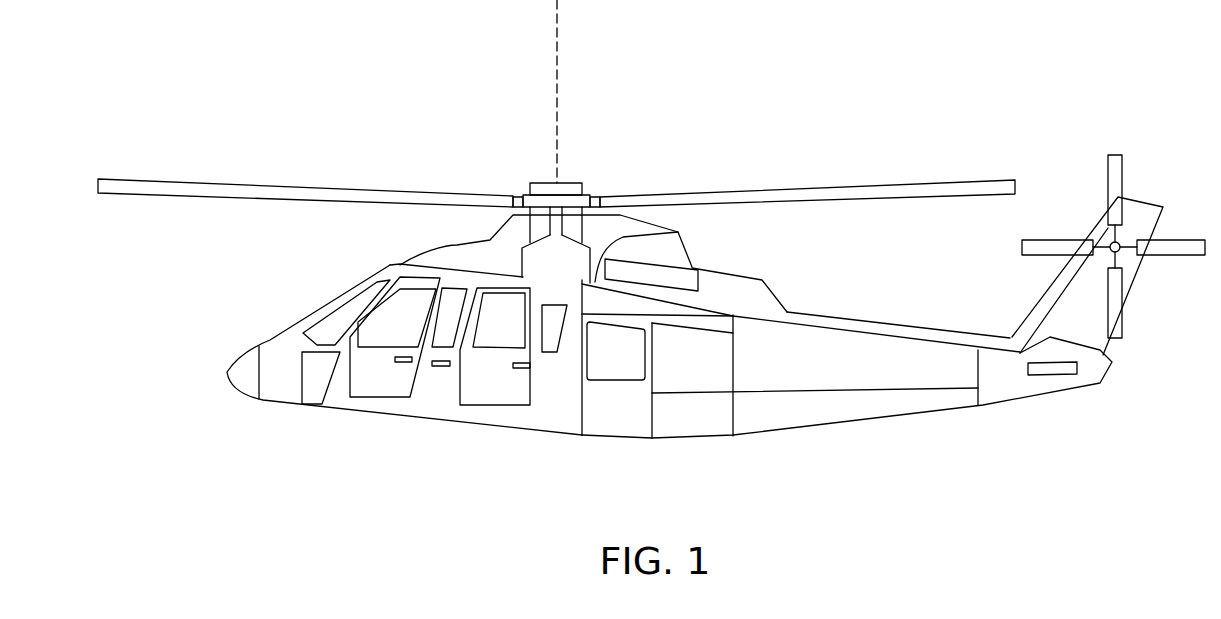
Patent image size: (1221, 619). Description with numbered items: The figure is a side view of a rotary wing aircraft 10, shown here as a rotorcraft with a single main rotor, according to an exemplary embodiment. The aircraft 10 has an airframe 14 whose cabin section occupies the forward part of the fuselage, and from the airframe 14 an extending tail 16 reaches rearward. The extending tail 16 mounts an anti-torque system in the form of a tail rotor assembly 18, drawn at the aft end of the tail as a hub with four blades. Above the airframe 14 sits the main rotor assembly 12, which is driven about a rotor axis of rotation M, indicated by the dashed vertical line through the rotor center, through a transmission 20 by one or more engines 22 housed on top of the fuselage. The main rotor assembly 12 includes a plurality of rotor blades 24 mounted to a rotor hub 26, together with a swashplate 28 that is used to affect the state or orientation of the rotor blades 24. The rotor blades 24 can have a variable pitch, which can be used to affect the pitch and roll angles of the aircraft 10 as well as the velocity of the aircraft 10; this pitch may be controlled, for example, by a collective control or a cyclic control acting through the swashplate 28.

The rotary wing aircraft 10 is at (755, 48).
The main rotor assembly 12 is at (556, 153).
The airframe 14 is at (415, 403).
The extending tail 16 is at (875, 407).
The tail rotor assembly 18 is at (1134, 191).
The transmission 20 is at (535, 263).
The engine 22 is at (688, 277).
The rotor blade 24 is at (785, 188).
The rotor hub 26 is at (565, 182).
The swashplate 28 is at (591, 185).
The rotor axis of rotation M is at (553, 45).